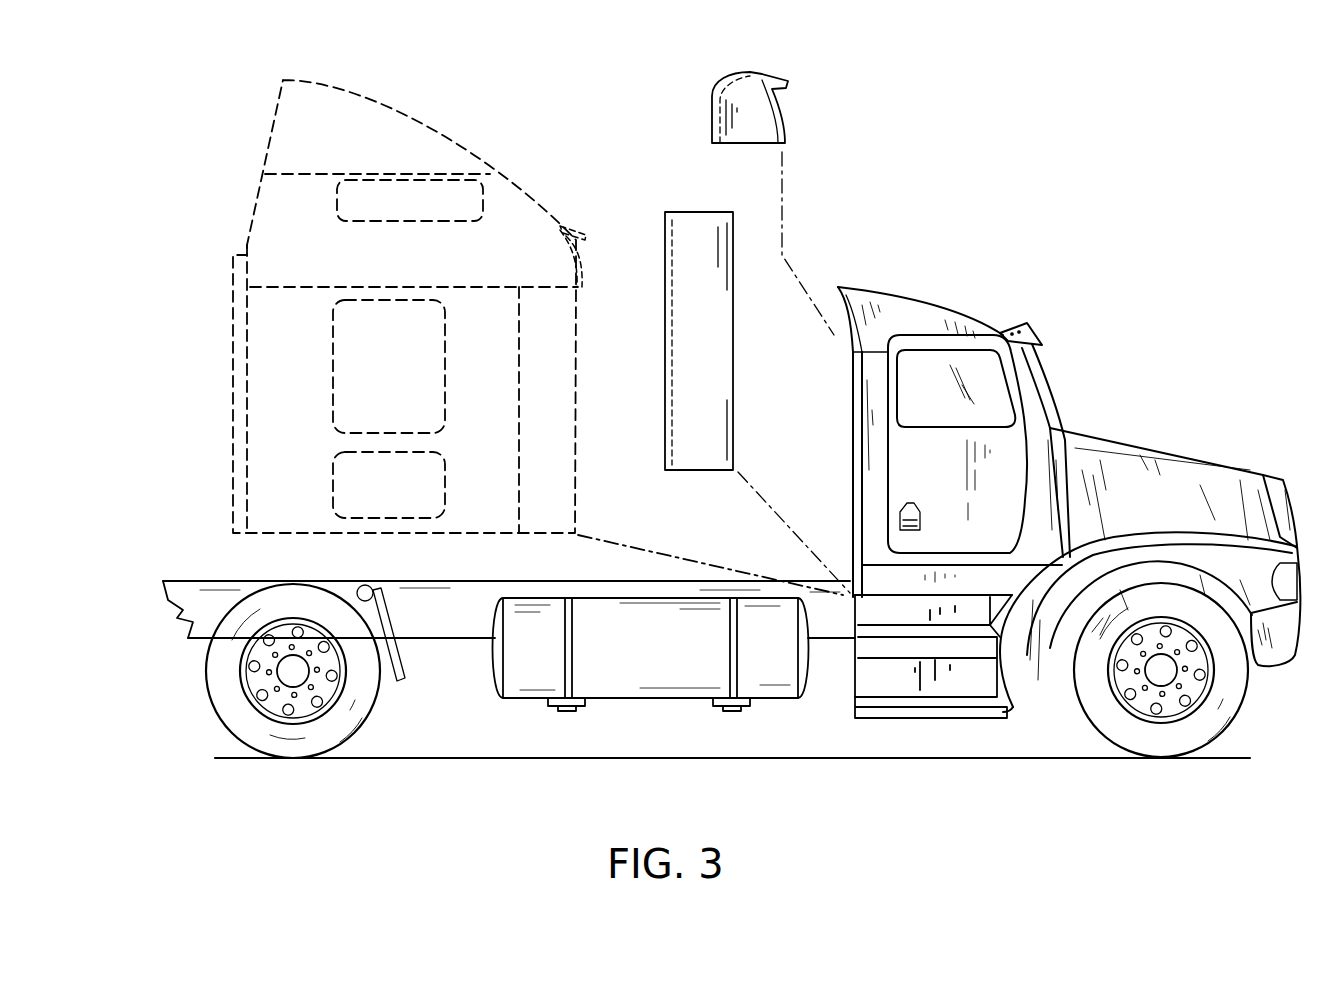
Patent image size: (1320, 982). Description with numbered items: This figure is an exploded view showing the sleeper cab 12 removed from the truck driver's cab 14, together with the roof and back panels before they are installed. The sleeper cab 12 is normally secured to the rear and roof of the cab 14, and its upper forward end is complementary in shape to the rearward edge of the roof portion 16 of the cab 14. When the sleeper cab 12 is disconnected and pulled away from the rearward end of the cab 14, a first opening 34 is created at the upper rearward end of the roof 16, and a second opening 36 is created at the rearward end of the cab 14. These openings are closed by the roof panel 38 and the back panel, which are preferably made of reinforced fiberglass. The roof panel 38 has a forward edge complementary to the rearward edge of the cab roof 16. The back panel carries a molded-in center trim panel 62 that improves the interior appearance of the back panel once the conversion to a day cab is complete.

The sleeper cab 12 is at (432, 124).
The cab 14 is at (731, 480).
The roof portion 16 is at (954, 399).
The first opening 34 is at (846, 312).
The opening 36 is at (846, 466).
The roof panel 38 is at (712, 83).
The molded-in center trim panel 62 is at (655, 296).